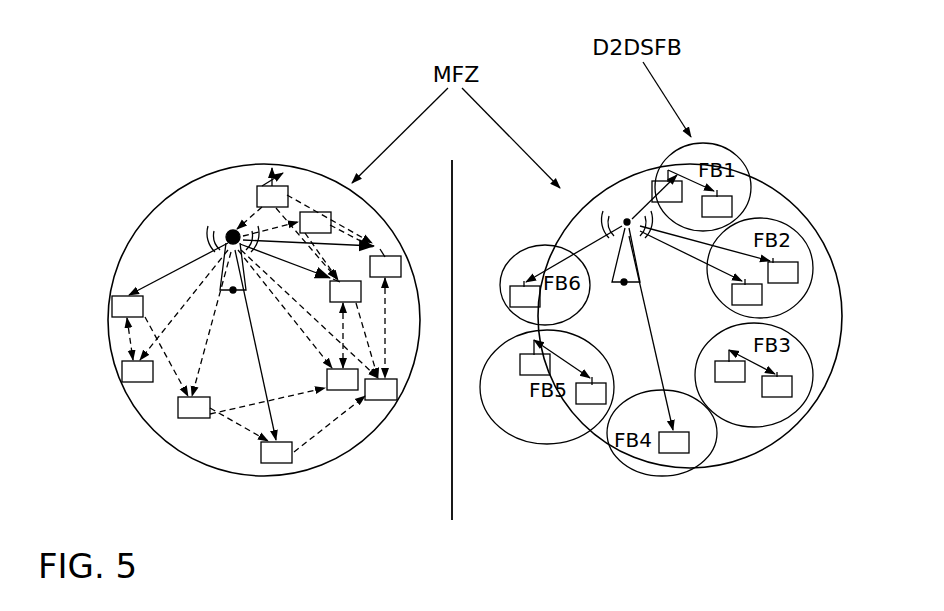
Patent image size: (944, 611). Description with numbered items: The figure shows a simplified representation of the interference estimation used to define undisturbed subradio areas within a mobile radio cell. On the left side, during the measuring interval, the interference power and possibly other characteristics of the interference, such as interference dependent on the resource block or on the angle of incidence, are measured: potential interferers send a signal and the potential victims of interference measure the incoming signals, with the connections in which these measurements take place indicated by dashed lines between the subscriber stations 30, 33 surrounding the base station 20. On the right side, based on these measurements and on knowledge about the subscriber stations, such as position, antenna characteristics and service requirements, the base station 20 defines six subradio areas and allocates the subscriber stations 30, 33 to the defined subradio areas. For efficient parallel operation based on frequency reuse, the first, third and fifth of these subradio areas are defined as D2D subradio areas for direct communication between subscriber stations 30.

The base station 20 is at (233, 290).
The subscriber station for D2D communication 30 is at (448, 320).
The subscriber station for other mobile communication 33 is at (463, 383).